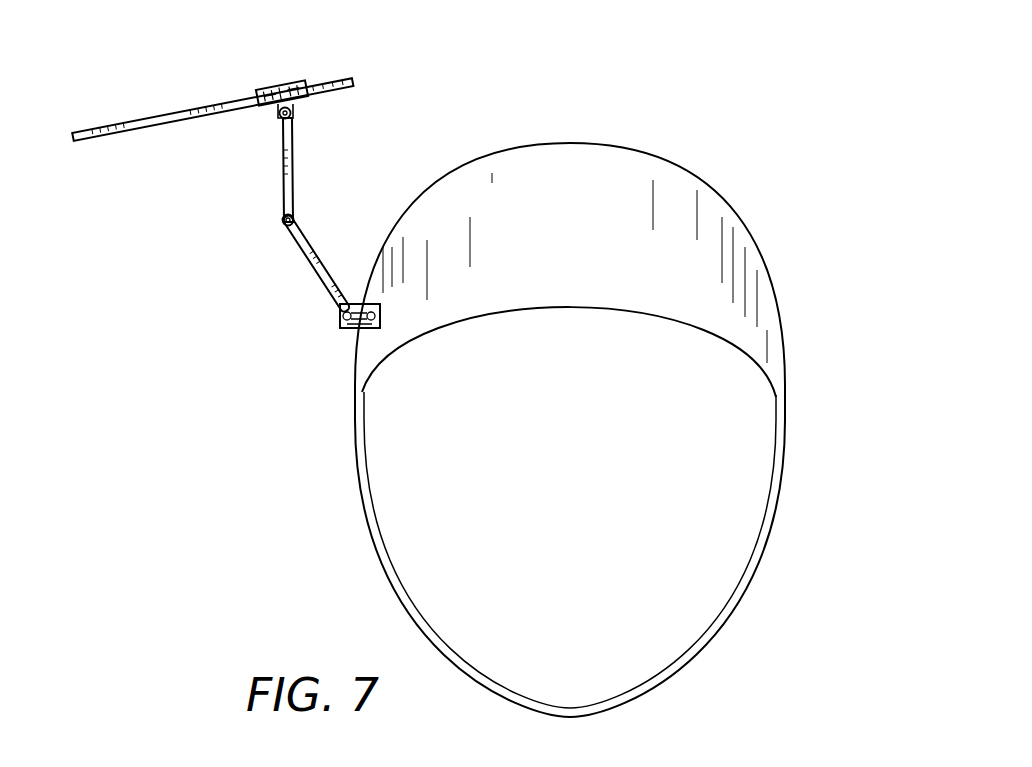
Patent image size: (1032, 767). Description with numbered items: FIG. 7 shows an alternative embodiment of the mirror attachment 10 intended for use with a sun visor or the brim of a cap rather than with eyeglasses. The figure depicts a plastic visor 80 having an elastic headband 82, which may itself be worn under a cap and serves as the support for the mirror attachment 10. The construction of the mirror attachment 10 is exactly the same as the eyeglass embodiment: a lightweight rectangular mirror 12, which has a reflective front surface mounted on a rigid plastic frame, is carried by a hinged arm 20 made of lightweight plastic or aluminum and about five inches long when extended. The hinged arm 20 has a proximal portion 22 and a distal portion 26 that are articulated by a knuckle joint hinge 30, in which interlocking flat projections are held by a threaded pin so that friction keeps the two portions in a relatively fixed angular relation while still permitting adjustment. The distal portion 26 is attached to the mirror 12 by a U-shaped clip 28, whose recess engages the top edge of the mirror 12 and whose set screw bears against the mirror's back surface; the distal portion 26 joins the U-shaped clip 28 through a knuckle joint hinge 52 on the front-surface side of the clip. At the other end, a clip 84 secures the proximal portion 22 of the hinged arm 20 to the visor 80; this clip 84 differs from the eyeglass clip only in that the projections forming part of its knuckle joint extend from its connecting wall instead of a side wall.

The mirror attachment 10 is at (380, 90).
The mirror 12 is at (127, 120).
The hinged arm 20 is at (310, 220).
The proximal portion 22 is at (320, 283).
The distal portion 26 is at (282, 157).
The U-shaped clip 28 is at (278, 87).
The knuckle joint hinge 30 is at (285, 222).
The knuckle joint hinge 52 is at (295, 110).
The plastic visor 80 is at (768, 262).
The elastic headband 82 is at (357, 473).
The clip 84 is at (383, 315).